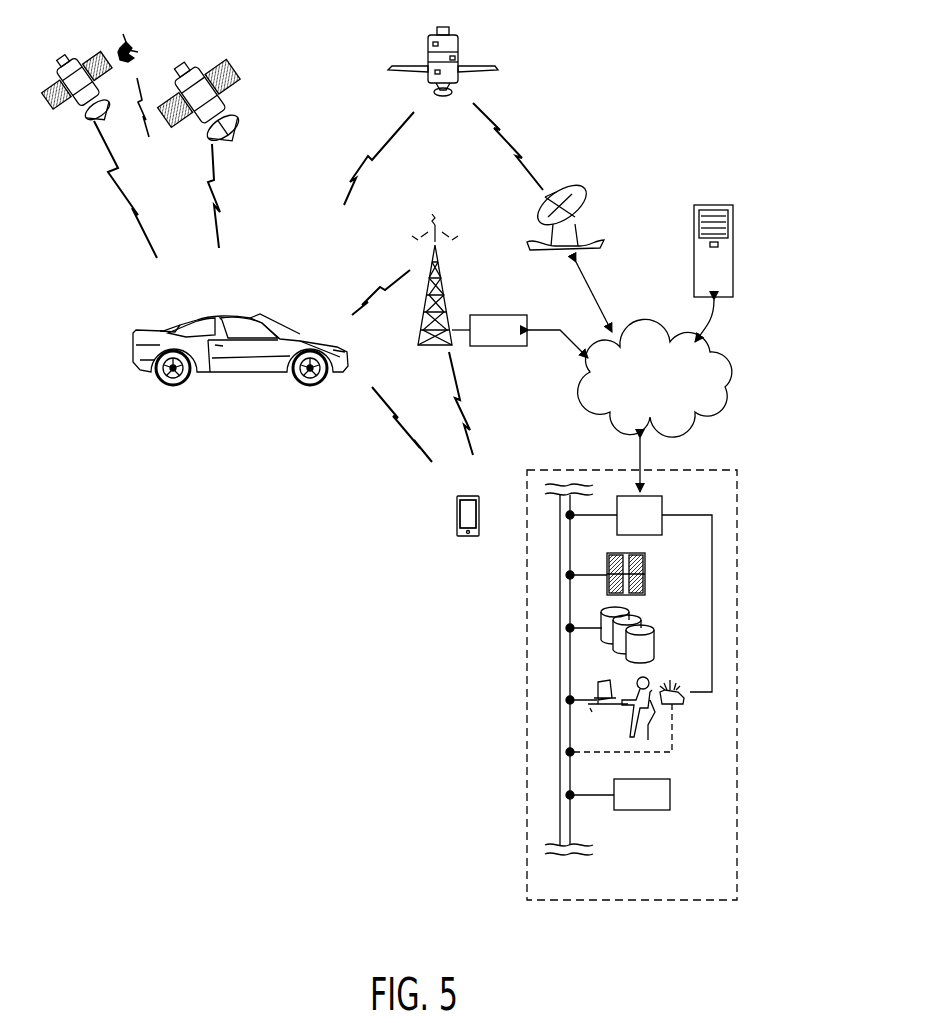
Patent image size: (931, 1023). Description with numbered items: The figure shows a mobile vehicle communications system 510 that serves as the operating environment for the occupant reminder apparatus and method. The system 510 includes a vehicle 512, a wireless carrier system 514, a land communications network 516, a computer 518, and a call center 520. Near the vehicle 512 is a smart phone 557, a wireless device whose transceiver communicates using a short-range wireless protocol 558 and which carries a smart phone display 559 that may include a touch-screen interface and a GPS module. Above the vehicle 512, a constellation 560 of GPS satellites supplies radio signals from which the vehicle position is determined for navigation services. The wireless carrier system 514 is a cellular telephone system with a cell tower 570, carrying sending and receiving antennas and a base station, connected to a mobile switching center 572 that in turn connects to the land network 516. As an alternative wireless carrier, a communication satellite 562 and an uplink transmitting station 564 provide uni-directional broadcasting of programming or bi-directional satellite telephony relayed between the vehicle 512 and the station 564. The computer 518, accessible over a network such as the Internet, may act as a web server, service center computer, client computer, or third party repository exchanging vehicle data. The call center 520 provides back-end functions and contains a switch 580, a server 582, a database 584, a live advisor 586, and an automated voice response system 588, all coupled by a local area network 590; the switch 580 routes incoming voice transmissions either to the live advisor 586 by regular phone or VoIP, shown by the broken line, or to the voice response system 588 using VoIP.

The mobile vehicle communications system 510 is at (645, 72).
The vehicle 512 is at (133, 357).
The wireless carrier system 514 is at (425, 352).
The land communications network 516 is at (720, 392).
The computer 518 is at (733, 268).
The call center 520 is at (620, 905).
The smart phone 557 is at (457, 522).
The short-range wireless protocol 558 is at (384, 392).
The smart phone display 559 is at (470, 520).
The constellation of GPS satellites 560 is at (260, 105).
The communication satellite 562 is at (458, 45).
The uplink transmitting station 564 is at (600, 238).
The cell tower 570 is at (445, 283).
The mobile switching center 572 is at (497, 346).
The switch 580 is at (643, 645).
The server 582 is at (646, 580).
The database 584 is at (662, 643).
The live advisor 586 is at (622, 730).
The automated voice response system 588 is at (672, 793).
The local area network 590 is at (573, 822).